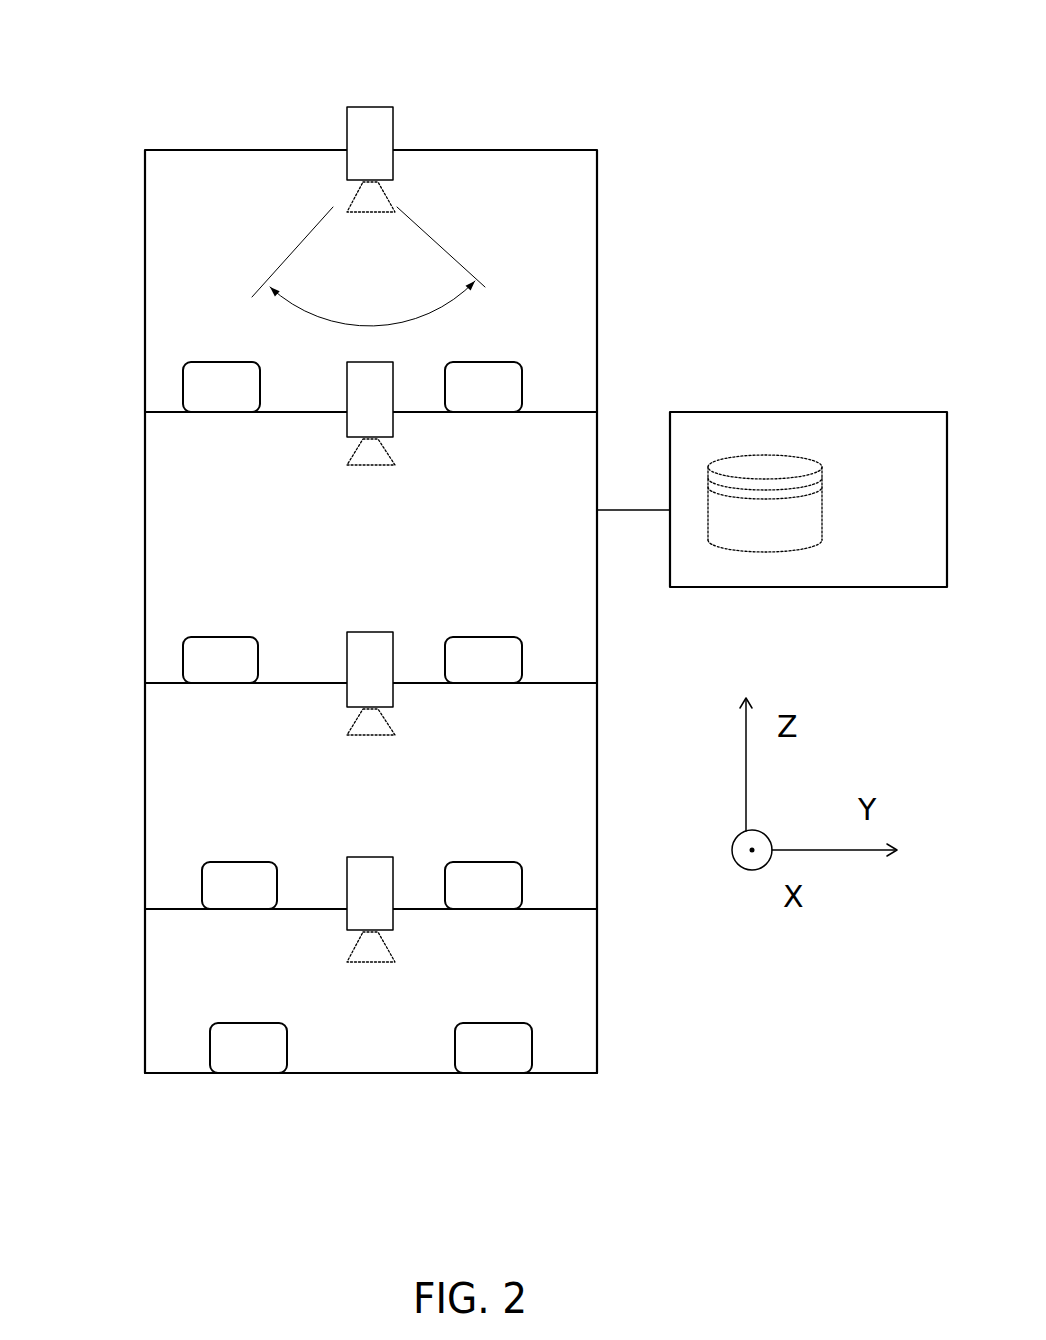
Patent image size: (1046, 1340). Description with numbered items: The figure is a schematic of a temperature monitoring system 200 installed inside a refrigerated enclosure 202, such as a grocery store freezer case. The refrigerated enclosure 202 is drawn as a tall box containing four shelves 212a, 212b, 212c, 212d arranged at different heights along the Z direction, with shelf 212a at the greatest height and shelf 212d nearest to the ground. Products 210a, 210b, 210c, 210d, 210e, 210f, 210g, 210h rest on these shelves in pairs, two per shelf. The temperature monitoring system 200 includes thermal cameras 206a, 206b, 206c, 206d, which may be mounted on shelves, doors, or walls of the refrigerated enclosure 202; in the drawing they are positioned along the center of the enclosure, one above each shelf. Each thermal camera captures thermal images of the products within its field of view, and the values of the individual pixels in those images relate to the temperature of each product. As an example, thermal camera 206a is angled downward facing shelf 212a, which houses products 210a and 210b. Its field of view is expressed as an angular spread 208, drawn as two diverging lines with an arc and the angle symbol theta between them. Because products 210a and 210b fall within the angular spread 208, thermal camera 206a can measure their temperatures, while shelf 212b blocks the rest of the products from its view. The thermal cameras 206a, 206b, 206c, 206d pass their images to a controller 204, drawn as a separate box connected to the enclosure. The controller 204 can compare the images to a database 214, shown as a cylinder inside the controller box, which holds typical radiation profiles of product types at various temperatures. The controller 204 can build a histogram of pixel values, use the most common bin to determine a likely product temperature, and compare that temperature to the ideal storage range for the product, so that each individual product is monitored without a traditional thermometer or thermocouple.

The temperature monitoring system 200 is at (104, 45).
The refrigerated enclosure 202 is at (447, 150).
The controller 204 is at (748, 412).
The thermal camera 206a is at (372, 107).
The thermal camera 206b is at (353, 467).
The thermal camera 206c is at (373, 632).
The thermal camera 206d is at (360, 857).
The angular spread 208 is at (443, 245).
The product 210a is at (205, 362).
The product 210b is at (487, 362).
The product 210c is at (202, 637).
The product 210d is at (463, 637).
The product 210e is at (223, 862).
The product 210f is at (463, 862).
The product 210g is at (233, 1023).
The product 210h is at (477, 1023).
The shelf 212a is at (202, 413).
The shelf 212b is at (165, 683).
The shelf 212c is at (165, 909).
The shelf 212d is at (333, 1073).
The database 214 is at (820, 512).